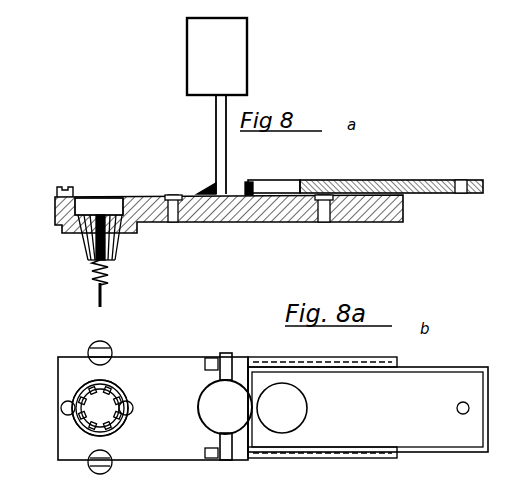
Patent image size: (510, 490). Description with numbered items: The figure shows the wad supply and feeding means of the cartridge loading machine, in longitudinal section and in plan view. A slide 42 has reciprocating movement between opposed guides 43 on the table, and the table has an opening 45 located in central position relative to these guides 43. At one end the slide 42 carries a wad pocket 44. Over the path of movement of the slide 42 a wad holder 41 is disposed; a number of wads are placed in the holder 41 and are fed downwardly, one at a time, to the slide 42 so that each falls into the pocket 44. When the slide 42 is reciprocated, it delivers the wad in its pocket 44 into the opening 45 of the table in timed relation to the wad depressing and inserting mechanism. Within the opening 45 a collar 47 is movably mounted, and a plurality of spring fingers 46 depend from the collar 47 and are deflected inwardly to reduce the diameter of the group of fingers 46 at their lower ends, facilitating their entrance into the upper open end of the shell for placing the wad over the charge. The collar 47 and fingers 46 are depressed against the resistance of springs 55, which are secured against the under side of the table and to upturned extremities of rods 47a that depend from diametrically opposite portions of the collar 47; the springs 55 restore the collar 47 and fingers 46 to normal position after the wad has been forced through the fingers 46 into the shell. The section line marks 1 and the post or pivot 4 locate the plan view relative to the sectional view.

In FIG. 8, the base plate 1 is at (252, 222).
In FIG. 8A, the base plate 1 is at (157, 438).
In FIG. 8A, the post / pivot 4 is at (198, 414).
In FIG. 8, the wad holder 41 is at (207, 51).
In FIG. 8, the slide 42 is at (398, 180).
In FIG. 8A, the slide 42 is at (368, 409).
In FIG. 8A, the guides 43 is at (283, 362).
In FIG. 8, the wad pocket 44 is at (277, 188).
In FIG. 8A, the wad pocket 44 is at (293, 415).
In FIG. 8, the opening 45 is at (115, 194).
In FIG. 8A, the opening 45 is at (100, 412).
In FIG. 8, the spring fingers 46 is at (118, 248).
In FIG. 8, the collar 47 is at (55, 222).
In FIG. 8A, the collar 47 is at (112, 390).
In FIG. 8, the rods 47a is at (160, 319).
In FIG. 8, the springs 55 is at (95, 288).